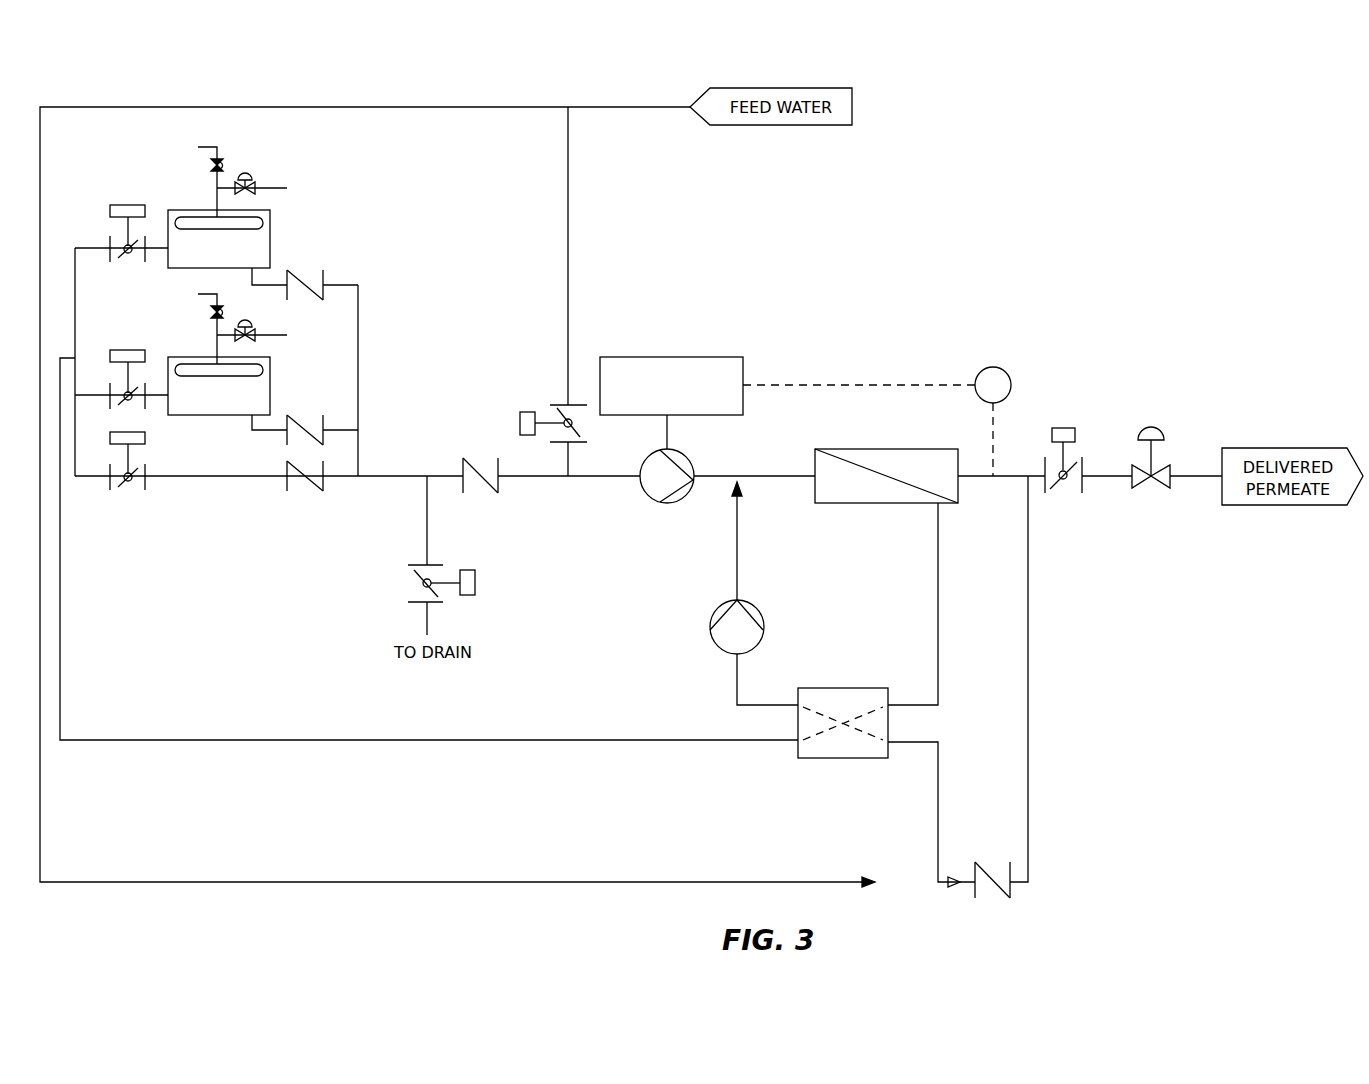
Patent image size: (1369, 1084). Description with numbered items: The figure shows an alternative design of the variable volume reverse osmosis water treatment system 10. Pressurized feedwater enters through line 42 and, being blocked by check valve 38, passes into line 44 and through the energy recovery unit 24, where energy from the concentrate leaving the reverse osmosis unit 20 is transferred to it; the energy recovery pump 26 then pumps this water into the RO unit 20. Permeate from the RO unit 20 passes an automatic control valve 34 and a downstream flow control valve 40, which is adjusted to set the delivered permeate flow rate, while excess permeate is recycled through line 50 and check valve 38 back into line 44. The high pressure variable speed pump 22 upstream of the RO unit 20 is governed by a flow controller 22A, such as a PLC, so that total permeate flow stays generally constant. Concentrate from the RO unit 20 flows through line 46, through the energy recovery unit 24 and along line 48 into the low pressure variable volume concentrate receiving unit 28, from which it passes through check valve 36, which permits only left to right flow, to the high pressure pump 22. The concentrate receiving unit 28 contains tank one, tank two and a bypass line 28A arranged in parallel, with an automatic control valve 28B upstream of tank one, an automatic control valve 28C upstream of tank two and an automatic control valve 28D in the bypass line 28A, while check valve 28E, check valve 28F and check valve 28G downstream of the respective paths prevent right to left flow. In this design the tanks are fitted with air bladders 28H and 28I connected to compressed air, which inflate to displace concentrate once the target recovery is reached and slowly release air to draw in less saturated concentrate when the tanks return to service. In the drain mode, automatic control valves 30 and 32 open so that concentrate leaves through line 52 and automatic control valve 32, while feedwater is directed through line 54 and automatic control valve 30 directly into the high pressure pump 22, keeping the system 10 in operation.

The water treatment system 10 is at (1038, 208).
The reverse osmosis unit 20 is at (938, 449).
The high pressure variable speed pump 22 is at (690, 455).
The flow controller 22A is at (1006, 372).
The energy recovery unit 24 is at (840, 758).
The energy recovery pump 26 is at (758, 610).
The variable volume concentrate receiving unit 28 is at (356, 186).
The bypass line 28A is at (195, 476).
The automatic control valve 28B is at (118, 205).
The automatic control valve 28C is at (140, 350).
The automatic control valve 28D is at (145, 440).
The check valve 28E is at (300, 275).
The check valve 28F is at (300, 420).
The check valve 28G is at (305, 491).
The air bladder 28H is at (265, 222).
The air bladder 28I is at (265, 369).
The automatic control valve 30 is at (518, 421).
The automatic control valve 32 is at (476, 580).
The automatic control valve 34 is at (1068, 428).
The check valve 36 is at (480, 497).
The check valve 38 is at (993, 888).
The flow control valve 40 is at (1163, 435).
The line 42 is at (412, 107).
The line 44 is at (938, 835).
The line 46 is at (938, 595).
The line 48 is at (533, 740).
The line 50 is at (1028, 668).
The line 52 is at (427, 540).
The line 54 is at (568, 306).